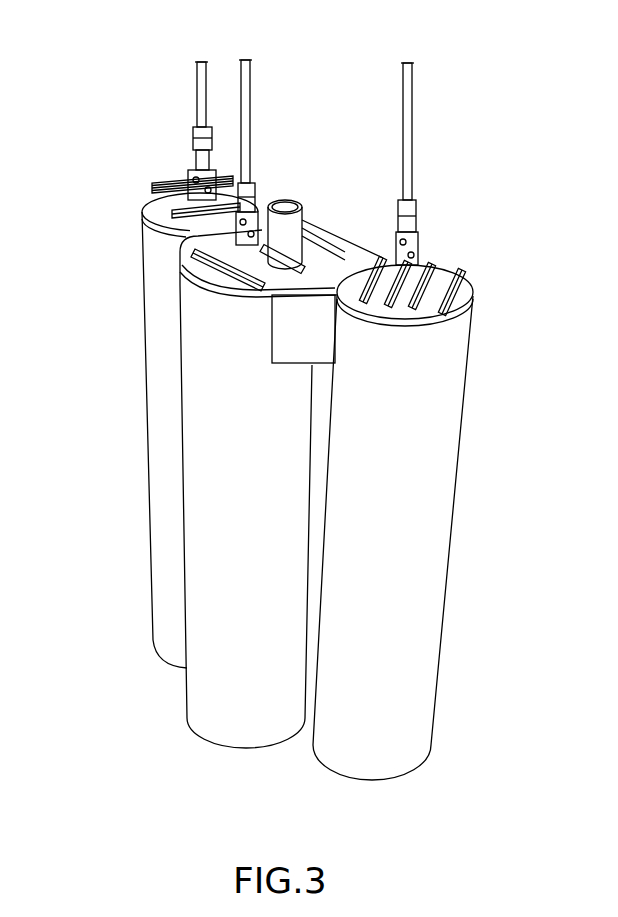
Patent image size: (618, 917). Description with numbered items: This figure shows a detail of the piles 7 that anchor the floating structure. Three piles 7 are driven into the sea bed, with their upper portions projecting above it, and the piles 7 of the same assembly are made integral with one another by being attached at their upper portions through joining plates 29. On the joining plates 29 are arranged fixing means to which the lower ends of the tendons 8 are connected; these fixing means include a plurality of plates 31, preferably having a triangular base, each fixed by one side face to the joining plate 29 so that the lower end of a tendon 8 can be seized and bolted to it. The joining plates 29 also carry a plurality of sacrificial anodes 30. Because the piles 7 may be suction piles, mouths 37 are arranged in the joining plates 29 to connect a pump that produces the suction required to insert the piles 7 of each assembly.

The piles 7 is at (223, 507).
The tendons 8 is at (197, 75).
The joining plates 29 is at (412, 197).
The sacrificial anodes 30 is at (450, 290).
The plates 31 is at (200, 268).
The mouths 37 is at (280, 225).